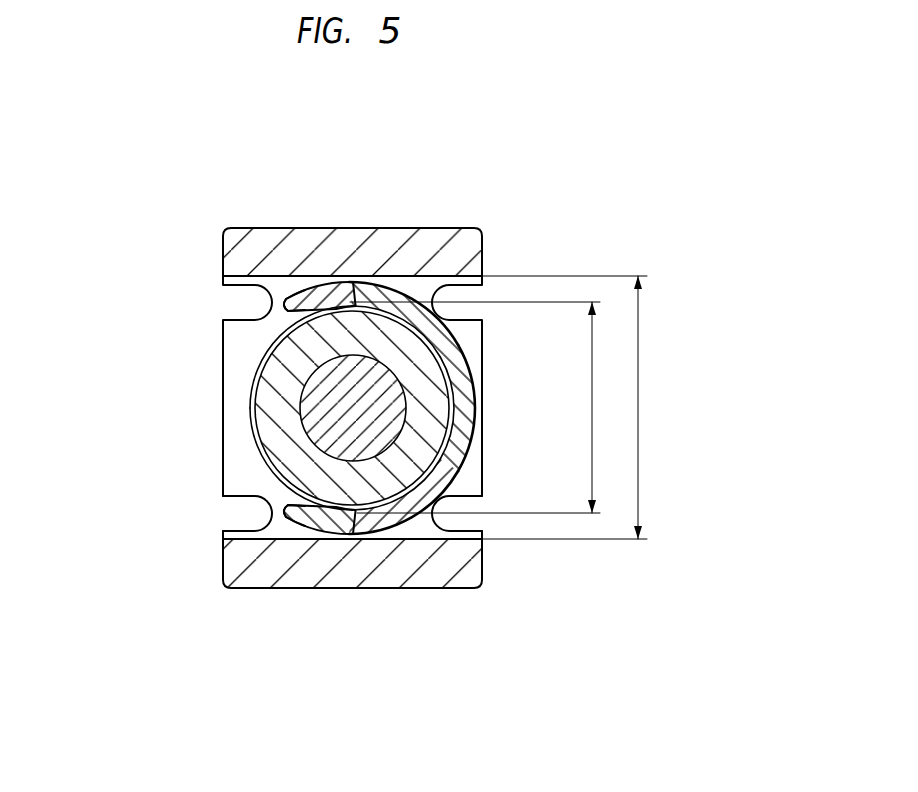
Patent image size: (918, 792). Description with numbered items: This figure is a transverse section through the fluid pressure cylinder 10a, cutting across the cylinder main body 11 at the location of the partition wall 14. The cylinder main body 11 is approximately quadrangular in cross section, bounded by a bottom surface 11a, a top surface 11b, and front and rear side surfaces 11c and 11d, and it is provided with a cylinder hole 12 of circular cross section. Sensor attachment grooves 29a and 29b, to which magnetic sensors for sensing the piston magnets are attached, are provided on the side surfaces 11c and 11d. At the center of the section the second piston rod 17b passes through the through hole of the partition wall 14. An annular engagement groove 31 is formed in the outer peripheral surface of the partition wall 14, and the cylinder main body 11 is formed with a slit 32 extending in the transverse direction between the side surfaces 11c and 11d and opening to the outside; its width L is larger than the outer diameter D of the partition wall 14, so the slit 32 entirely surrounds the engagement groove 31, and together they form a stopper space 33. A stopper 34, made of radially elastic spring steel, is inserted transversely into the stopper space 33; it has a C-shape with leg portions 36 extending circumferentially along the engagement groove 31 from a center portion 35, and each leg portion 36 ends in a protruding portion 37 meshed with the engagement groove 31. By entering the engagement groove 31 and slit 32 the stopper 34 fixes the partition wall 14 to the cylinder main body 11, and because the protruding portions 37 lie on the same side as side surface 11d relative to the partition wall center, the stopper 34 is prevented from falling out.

The fluid pressure cylinder 10a is at (513, 193).
The cylinder main body 11 is at (482, 577).
The bottom surface 11a is at (407, 590).
The top surface 11b is at (402, 227).
The front side surface 11c is at (486, 245).
The rear side surface 11d is at (223, 466).
The cylinder hole 12 is at (265, 382).
The partition wall 14 is at (432, 390).
The second piston rod 17b is at (341, 402).
The sensor attachment groove 29a is at (446, 524).
The sensor attachment groove 29b is at (258, 512).
The annular engagement groove 31 is at (252, 425).
The slit 32 is at (288, 535).
The stopper space 33 is at (418, 287).
The stopper 34 is at (470, 483).
The center portion 35 is at (470, 415).
The leg portion 36 is at (372, 290).
The protruding portion 37 is at (290, 300).